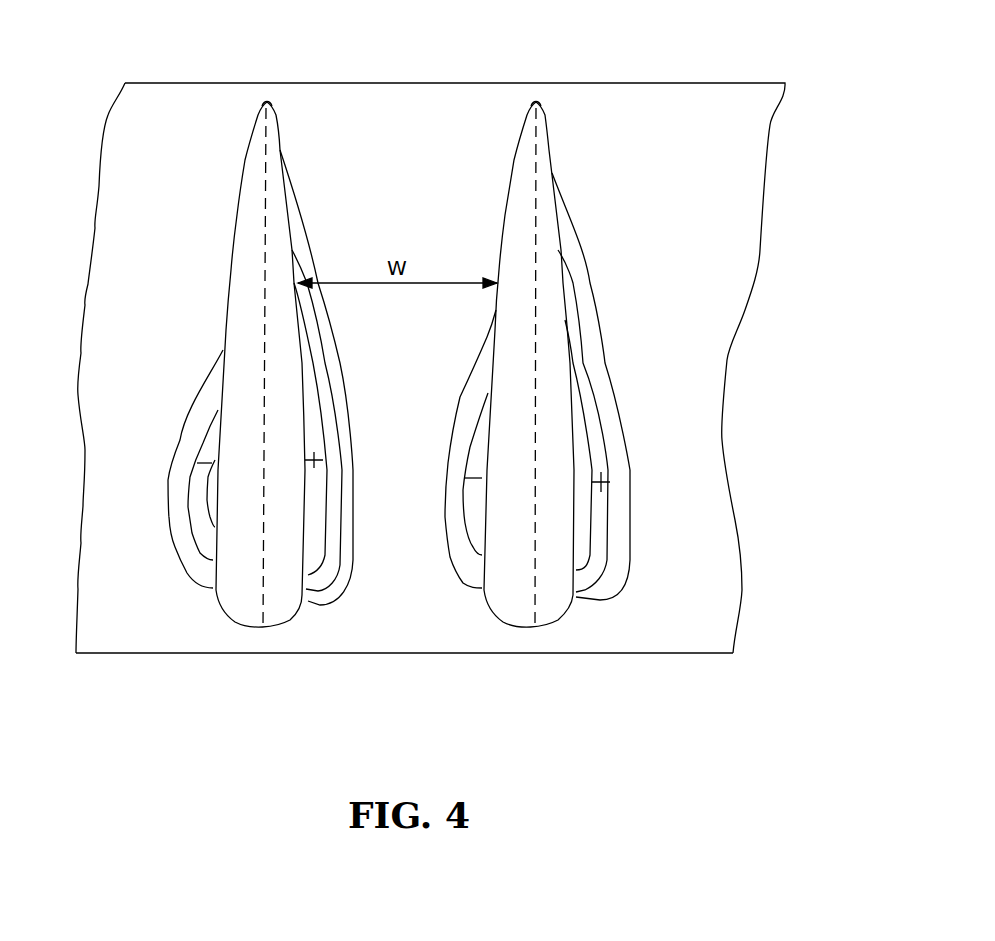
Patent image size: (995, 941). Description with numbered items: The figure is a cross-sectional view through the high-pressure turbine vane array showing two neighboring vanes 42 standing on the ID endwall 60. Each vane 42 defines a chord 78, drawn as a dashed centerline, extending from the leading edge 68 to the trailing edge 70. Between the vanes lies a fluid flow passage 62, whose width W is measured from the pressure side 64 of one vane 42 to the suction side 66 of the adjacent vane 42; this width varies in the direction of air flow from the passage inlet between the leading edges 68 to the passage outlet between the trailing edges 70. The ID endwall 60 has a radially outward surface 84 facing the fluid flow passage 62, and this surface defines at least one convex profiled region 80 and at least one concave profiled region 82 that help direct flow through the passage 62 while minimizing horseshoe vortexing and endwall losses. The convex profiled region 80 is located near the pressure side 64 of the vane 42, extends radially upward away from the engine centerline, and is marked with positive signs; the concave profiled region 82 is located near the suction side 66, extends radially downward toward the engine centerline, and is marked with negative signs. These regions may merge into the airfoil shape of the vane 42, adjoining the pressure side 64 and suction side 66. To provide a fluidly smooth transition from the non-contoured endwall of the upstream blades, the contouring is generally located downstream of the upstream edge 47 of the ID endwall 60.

The vane 42 is at (256, 477).
The upstream edge of the ID endwall 47 is at (644, 653).
The ID endwall 60 is at (683, 617).
The fluid flow passage 62 is at (401, 503).
The pressure side 64 is at (332, 332).
The suction side 66 is at (229, 295).
The leading edge 68 is at (250, 627).
The trailing edge 70 is at (268, 100).
The chord 78 is at (262, 530).
The convex profiled region 80 is at (328, 440).
The concave profiled region 82 is at (192, 550).
The radially outward surface 84 is at (423, 110).